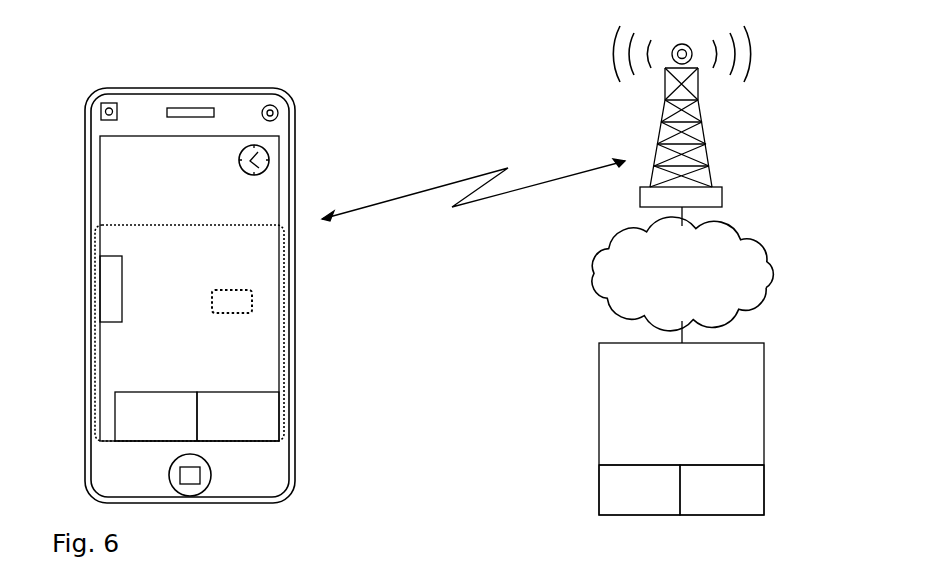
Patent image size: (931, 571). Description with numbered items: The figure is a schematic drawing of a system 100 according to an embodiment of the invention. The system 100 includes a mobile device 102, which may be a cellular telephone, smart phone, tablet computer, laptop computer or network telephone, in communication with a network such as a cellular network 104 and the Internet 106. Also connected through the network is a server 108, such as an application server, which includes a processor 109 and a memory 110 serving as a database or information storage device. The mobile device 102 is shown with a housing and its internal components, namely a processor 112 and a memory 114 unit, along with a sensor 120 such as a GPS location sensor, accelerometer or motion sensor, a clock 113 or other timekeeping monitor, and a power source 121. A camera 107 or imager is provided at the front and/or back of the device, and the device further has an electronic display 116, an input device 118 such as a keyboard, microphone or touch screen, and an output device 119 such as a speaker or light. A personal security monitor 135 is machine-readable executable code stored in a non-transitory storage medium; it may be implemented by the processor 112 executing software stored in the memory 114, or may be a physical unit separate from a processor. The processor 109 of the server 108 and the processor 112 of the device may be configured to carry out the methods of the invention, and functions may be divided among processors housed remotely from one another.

The system 100 is at (493, 82).
The mobile device 102 is at (295, 373).
The cellular network 104 is at (712, 158).
The Internet 106 is at (766, 250).
The camera 107 is at (270, 105).
The server 108 is at (764, 368).
The processor 109 is at (764, 487).
The memory 110 is at (598, 493).
The processor 112 is at (235, 392).
The clock 113 is at (270, 159).
The memory unit 114 is at (155, 392).
The electronic display 116 is at (114, 177).
The input device 118 is at (168, 207).
The output device 119 is at (108, 102).
The sensor 120 is at (191, 108).
The power source 121 is at (289, 470).
The personal security monitor 135 is at (252, 296).